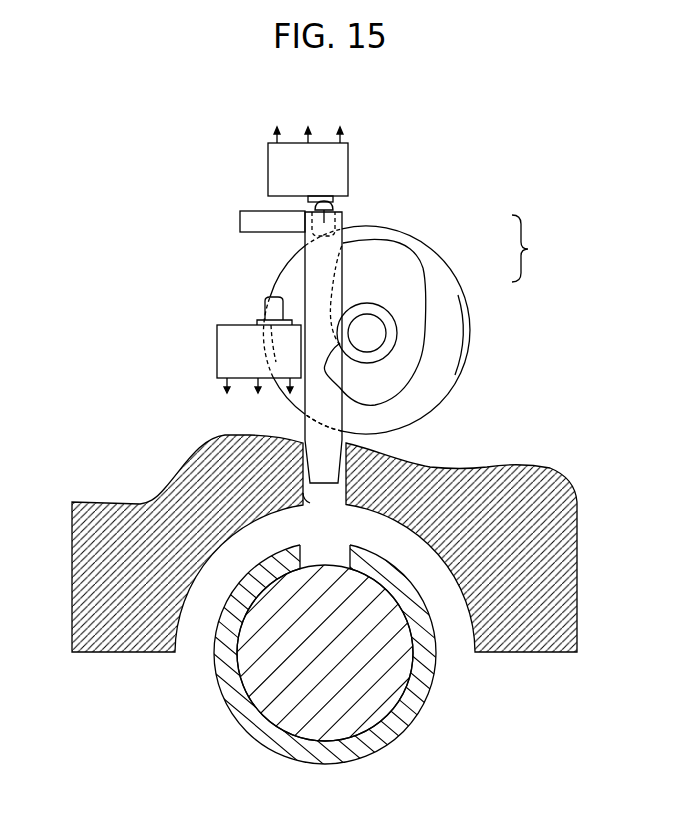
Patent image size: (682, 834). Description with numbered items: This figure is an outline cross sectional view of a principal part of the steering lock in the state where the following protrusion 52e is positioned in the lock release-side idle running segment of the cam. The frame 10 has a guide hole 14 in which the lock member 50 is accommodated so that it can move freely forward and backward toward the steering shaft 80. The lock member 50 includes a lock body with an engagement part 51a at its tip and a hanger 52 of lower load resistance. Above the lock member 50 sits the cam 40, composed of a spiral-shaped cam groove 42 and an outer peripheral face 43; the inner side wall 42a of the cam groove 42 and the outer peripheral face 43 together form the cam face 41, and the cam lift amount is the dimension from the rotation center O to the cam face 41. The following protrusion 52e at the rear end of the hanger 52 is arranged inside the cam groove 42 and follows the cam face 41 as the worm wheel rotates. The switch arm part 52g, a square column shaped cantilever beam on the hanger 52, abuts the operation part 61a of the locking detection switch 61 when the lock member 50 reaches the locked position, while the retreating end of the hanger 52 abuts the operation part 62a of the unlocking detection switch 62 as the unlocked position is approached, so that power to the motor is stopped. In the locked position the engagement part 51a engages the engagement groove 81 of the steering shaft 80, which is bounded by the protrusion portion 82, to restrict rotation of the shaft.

The frame 10 is at (548, 652).
The guide hole 14 is at (313, 497).
The cam 40 is at (470, 360).
The cam face 41 is at (532, 248).
The cam groove 42 is at (452, 378).
The inner side wall 42a is at (423, 285).
The outer peripheral face 43 is at (388, 241).
The lock member 50 is at (345, 412).
The engagement part 51a is at (313, 467).
The hanger 52 is at (336, 210).
The following protrusion 52e is at (300, 225).
The switch arm part 52g is at (240, 229).
The locking detection switch 61 is at (222, 365).
The operation part 61a is at (265, 303).
The unlocking detection switch 62 is at (342, 153).
The operation part 62a is at (333, 206).
The steering shaft 80 is at (423, 717).
The engagement groove 81 is at (347, 550).
The protrusion portion 82 is at (227, 593).
The rotation center O is at (373, 332).